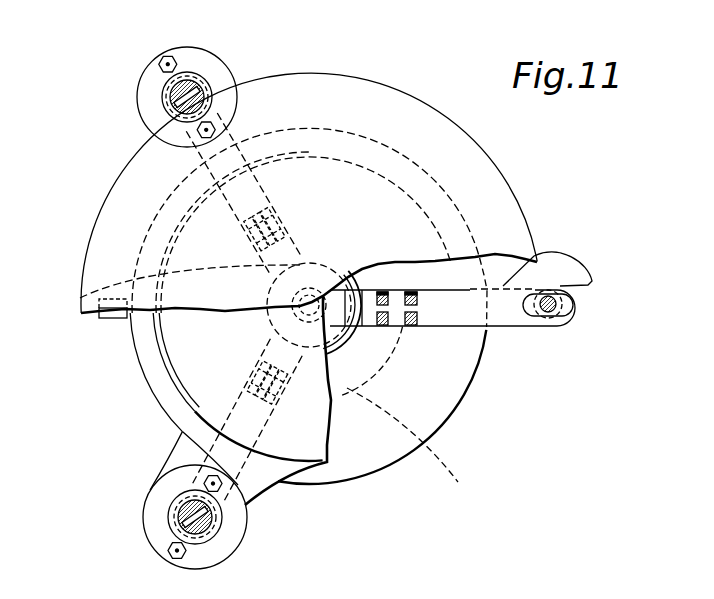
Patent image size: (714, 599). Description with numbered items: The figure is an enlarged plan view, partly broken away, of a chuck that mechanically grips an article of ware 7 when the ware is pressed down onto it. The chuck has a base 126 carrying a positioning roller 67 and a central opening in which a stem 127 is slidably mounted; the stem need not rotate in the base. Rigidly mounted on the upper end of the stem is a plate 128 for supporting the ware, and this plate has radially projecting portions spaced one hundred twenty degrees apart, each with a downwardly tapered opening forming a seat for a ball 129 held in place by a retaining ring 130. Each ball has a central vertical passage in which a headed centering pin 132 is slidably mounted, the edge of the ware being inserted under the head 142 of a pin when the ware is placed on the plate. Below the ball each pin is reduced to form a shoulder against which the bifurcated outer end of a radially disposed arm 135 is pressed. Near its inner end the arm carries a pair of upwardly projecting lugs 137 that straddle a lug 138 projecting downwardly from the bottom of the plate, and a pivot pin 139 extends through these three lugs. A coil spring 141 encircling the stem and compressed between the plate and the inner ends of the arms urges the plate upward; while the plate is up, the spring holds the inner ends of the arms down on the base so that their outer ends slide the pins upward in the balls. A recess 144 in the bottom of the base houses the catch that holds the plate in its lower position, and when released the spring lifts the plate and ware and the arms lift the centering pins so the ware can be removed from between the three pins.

The article of ware 7 is at (388, 107).
The head of centering pin 142 is at (168, 85).
The stem 127 is at (105, 291).
The positioning roller 67 is at (113, 316).
The centering pin 132 is at (572, 304).
The arm 135 is at (500, 317).
The lug 138 is at (453, 327).
The pivot pin 139 is at (430, 328).
The upwardly projecting lugs 137 is at (402, 327).
The coil spring 141 is at (383, 327).
The recess 144 is at (440, 450).
The base 126 is at (400, 450).
The plate 128 is at (316, 440).
The retaining ring 130 is at (236, 532).
The ball 129 is at (212, 528).